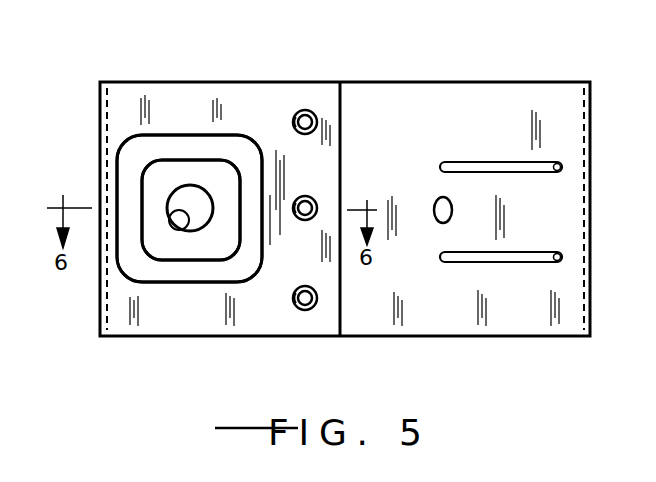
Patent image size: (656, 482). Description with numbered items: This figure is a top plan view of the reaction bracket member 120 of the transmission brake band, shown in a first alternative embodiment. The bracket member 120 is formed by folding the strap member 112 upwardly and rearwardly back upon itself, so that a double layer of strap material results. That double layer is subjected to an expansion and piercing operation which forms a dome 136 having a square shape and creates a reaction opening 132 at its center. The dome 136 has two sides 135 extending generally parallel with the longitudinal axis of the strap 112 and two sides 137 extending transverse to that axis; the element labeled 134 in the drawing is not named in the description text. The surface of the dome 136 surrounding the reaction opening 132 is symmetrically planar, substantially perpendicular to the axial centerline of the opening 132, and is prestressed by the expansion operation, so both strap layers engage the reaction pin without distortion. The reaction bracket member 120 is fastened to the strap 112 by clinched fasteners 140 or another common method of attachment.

The strap member 112 is at (485, 117).
The reaction bracket member 120 is at (132, 92).
The reaction opening 132 is at (170, 226).
The outer raised rim 134 is at (227, 148).
The sides 135 is at (193, 272).
The dome 136 is at (186, 170).
The sides 137 is at (130, 190).
The clinched fasteners 140 is at (312, 206).